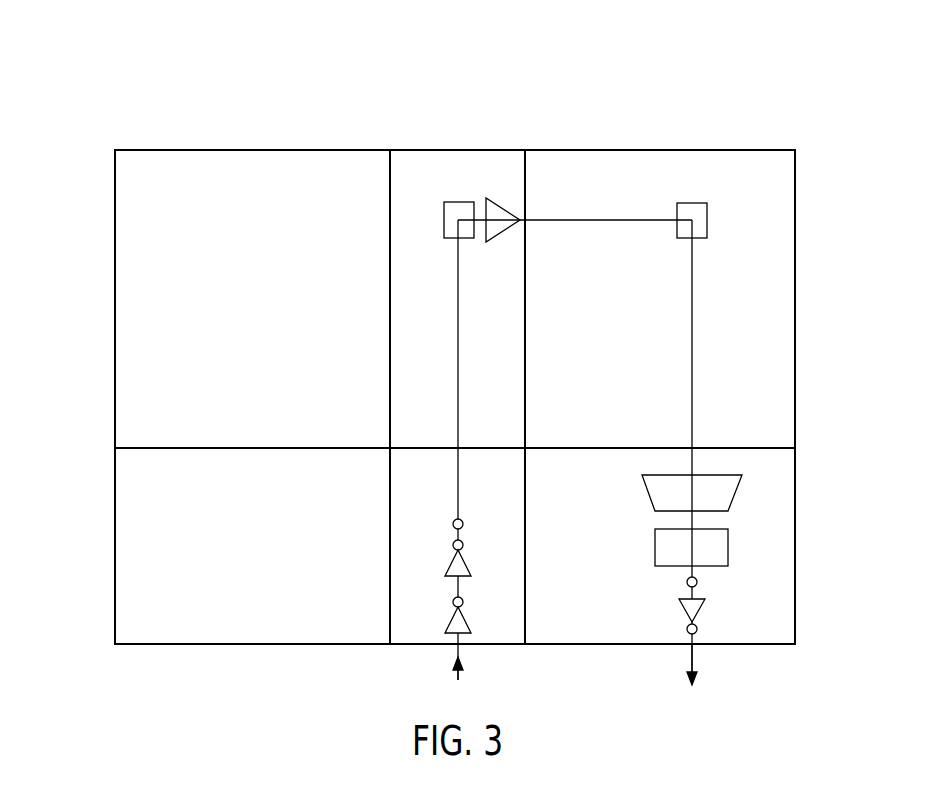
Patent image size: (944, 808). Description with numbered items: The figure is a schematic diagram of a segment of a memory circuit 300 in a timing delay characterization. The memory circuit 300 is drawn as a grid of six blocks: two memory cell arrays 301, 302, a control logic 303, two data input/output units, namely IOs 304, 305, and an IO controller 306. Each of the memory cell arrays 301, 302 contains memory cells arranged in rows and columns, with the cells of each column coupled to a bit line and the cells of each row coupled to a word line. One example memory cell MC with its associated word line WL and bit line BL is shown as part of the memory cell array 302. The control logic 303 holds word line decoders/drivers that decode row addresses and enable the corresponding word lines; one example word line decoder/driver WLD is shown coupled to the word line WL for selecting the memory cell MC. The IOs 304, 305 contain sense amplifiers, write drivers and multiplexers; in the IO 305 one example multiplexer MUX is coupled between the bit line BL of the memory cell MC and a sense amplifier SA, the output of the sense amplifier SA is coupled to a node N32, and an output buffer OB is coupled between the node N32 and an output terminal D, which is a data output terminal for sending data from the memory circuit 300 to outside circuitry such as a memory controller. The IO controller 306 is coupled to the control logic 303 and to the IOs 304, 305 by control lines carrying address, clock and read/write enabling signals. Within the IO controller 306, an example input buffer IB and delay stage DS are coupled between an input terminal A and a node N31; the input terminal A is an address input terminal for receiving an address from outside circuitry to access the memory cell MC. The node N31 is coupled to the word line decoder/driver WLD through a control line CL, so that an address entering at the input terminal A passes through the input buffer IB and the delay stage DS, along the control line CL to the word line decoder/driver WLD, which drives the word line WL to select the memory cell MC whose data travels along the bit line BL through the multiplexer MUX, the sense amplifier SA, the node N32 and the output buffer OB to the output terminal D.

The memory circuit 300 is at (152, 77).
The memory cell array 301 is at (245, 165).
The memory cell array 302 is at (667, 165).
The control logic 303 is at (447, 165).
The data input/output unit (IO) 304 is at (128, 541).
The data input/output unit (IO) 305 is at (786, 551).
The IO controller 306 is at (417, 634).
The word line decoder/driver WLD is at (498, 205).
The word line WL is at (604, 218).
The memory cell MC is at (708, 215).
The control line CL is at (457, 352).
The bit line BL is at (693, 348).
The node N31 is at (475, 520).
The delay stage DS is at (447, 563).
The input buffer IB is at (447, 623).
The input terminal A is at (462, 650).
The multiplexer MUX is at (643, 492).
The sense amplifier SA is at (655, 546).
The node N32 is at (707, 582).
The output buffer OB is at (680, 610).
The output terminal D is at (690, 655).